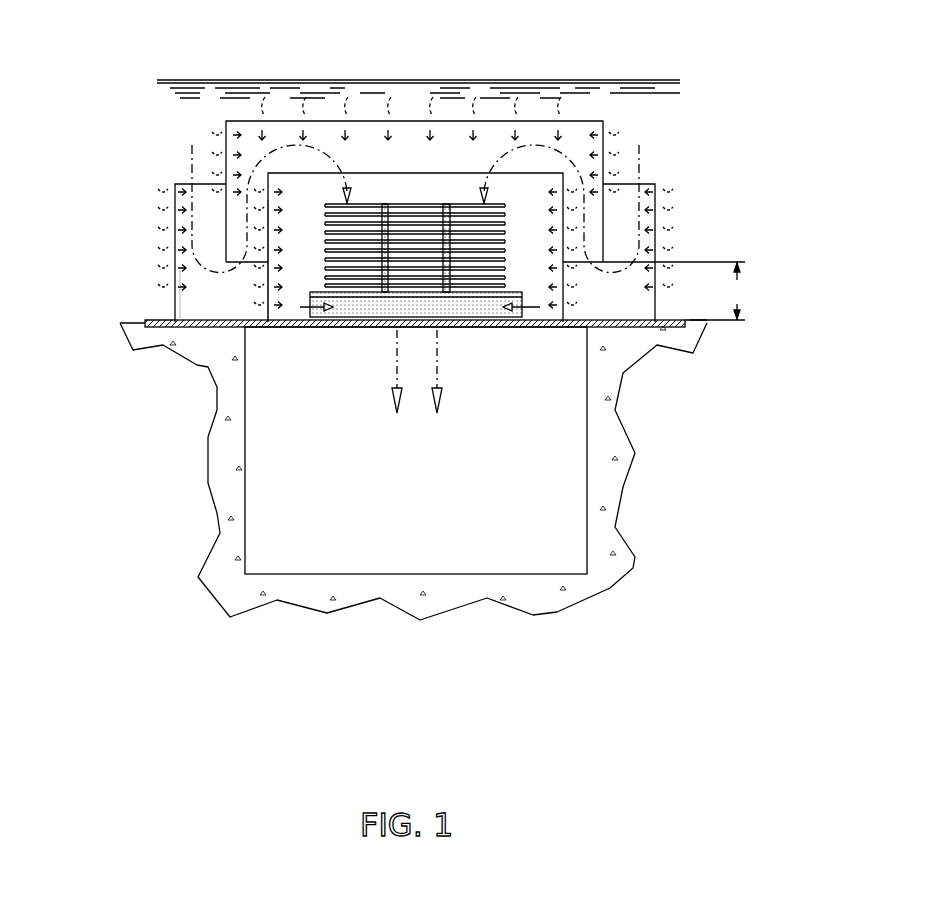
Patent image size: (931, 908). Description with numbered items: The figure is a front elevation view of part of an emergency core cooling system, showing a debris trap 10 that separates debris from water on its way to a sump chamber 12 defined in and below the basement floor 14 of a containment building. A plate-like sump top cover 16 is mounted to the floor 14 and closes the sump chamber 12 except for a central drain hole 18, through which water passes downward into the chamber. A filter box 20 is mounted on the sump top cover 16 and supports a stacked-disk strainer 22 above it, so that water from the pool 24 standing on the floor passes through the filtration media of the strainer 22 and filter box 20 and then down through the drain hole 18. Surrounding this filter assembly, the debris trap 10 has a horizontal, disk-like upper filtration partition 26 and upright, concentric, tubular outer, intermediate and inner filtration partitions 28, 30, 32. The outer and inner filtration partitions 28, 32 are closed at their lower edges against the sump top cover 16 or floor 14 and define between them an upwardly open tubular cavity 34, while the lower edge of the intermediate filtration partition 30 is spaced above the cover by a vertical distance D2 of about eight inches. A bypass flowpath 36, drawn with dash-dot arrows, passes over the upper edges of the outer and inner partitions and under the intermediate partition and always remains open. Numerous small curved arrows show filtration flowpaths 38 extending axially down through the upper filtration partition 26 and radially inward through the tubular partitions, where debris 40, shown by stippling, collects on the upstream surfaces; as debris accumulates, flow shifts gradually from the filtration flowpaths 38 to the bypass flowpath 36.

The debris trap 10 is at (158, 112).
The sump chamber 12 is at (538, 492).
The basement floor 14 is at (124, 325).
The sump top cover 16 is at (144, 320).
The drain hole 18 is at (447, 330).
The filter box 20 is at (366, 312).
The strainer 22 is at (415, 203).
The pool 24 is at (212, 82).
The upper filtration partition 26 is at (543, 121).
The outer filtration partition 28 is at (172, 201).
The intermediate filtration partition 30 is at (606, 143).
The inner filtration partition 32 is at (272, 222).
The tubular cavity 34 is at (218, 298).
The bypass flowpath 36 is at (187, 160).
The filtration flowpaths 38 is at (345, 102).
The debris 40 is at (405, 114).
The distance D2 is at (676, 291).